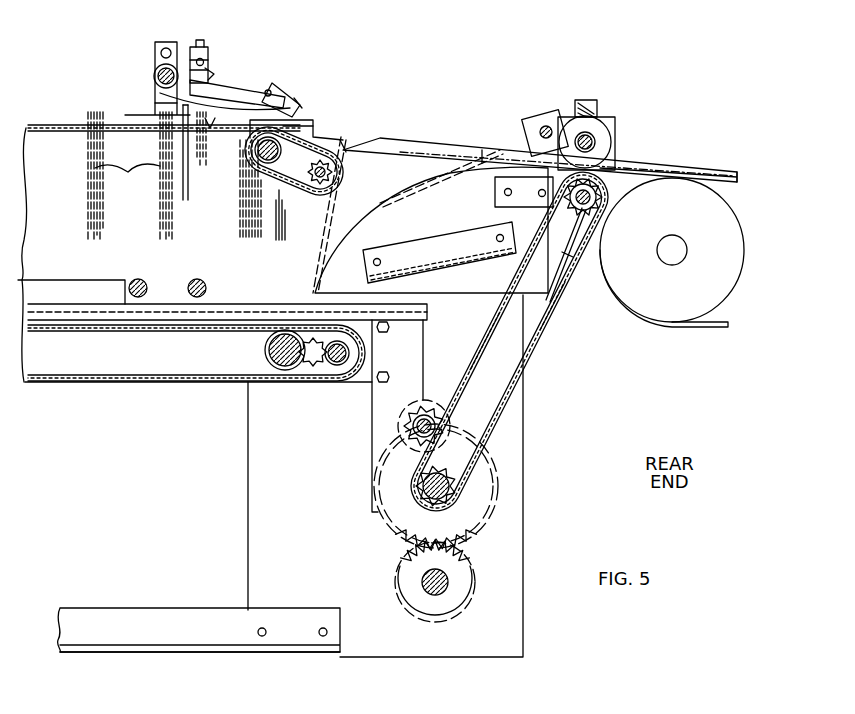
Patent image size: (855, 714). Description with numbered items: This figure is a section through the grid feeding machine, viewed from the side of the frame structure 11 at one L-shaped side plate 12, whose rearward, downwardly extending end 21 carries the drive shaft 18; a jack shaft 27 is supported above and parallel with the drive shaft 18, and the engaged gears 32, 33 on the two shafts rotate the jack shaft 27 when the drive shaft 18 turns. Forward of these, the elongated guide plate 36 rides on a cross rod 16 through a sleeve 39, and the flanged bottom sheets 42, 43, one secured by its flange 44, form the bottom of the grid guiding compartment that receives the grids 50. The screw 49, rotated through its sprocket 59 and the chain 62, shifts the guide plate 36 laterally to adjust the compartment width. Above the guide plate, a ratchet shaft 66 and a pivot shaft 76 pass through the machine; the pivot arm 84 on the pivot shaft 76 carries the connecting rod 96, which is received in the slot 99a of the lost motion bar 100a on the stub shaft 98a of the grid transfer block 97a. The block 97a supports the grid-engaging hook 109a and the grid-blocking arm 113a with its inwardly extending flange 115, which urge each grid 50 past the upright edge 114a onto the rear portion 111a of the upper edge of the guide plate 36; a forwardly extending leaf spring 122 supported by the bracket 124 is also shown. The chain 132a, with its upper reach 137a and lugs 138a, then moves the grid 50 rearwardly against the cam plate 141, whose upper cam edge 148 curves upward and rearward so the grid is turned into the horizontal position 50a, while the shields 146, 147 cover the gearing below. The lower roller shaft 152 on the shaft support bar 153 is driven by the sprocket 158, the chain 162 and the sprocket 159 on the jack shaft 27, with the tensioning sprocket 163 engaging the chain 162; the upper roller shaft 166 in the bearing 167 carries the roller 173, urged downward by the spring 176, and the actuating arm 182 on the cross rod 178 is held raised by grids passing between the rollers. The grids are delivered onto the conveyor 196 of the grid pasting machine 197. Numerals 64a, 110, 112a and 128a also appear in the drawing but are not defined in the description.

The frame structure 11 is at (398, 662).
The side plate 12 is at (505, 363).
The cross rod 16 is at (266, 346).
The drive shaft 18 is at (440, 595).
The rearward downwardly extending end 21 is at (505, 590).
The jack shaft 27 is at (445, 494).
The gear 32 is at (400, 575).
The gear 33 is at (385, 520).
The guide plate 36 is at (42, 255).
The sleeve 39 is at (282, 374).
The flanged bottom sheet 42 is at (168, 310).
The flanged bottom sheet 43 is at (238, 304).
The flange 44 is at (88, 292).
The screw 49 is at (338, 366).
The grid 50 is at (186, 176).
The horizontal position 50a is at (733, 168).
The sprocket 59 is at (326, 366).
The chain 62 is at (172, 381).
The roller 64a is at (254, 163).
The ratchet shaft 66 is at (143, 297).
The pivot shaft 76 is at (205, 282).
The pivot arm 84 is at (206, 47).
The connecting rod 96 is at (210, 62).
The grid transfer block 97a is at (255, 90).
The stub shaft 98a is at (188, 150).
The slot 99a is at (214, 74).
The lost motion bar 100a is at (190, 58).
The grid-engaging hook 109a is at (290, 88).
The base plate 110 is at (199, 661).
The rear portion of upper edge 111a is at (437, 150).
The tab 112a is at (298, 104).
The grid-blocking arm 113a is at (208, 128).
The upright edge 114a is at (340, 146).
The inwardly extending flange 115 is at (290, 133).
The leaf spring 122 is at (155, 92).
The bracket 124 is at (155, 62).
The sprocket 128a is at (322, 188).
The chain 132a is at (552, 318).
The upper reach 137a is at (350, 146).
The lug 138a is at (566, 275).
The cam plate 141 is at (431, 230).
The shield 146 is at (437, 266).
The shield 147 is at (430, 265).
The upper cam edge 148 is at (480, 163).
The lower roller shaft 152 is at (592, 200).
The shaft support bar 153 is at (517, 203).
The sprocket 158 is at (594, 215).
The sprocket 159 is at (455, 487).
The chain 162 is at (508, 412).
The tensioning sprocket 163 is at (428, 400).
The upper roller shaft 166 is at (592, 143).
The bearing 167 is at (607, 117).
The roller 173 is at (598, 135).
The spring 176 is at (582, 100).
The cross rod 178 is at (548, 125).
The actuating arm 182 is at (615, 166).
The conveyor 196 is at (735, 185).
The grid pasting machine 197 is at (680, 352).